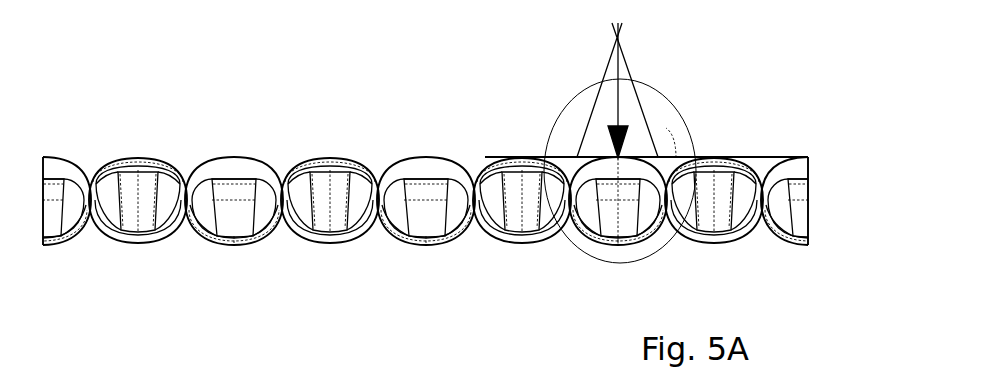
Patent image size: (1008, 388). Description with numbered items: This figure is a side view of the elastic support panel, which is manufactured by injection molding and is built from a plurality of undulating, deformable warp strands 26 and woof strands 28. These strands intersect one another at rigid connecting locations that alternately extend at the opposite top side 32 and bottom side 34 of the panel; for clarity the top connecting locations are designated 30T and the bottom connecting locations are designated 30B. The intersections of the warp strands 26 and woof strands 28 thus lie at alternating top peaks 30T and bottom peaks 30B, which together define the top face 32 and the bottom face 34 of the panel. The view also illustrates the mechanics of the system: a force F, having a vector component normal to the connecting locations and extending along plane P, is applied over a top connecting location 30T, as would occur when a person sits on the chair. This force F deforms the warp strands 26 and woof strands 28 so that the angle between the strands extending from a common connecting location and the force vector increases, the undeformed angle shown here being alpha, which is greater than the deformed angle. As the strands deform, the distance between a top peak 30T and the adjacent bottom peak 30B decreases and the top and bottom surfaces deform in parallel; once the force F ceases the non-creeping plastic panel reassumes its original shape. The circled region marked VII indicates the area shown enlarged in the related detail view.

The warp strands 26 is at (358, 178).
The woof strands 28 is at (322, 212).
The top connecting locations 30T is at (135, 158).
The bottom connecting locations 30B is at (151, 245).
The top side 32 is at (123, 163).
The bottom side 34 is at (115, 244).
The plane P is at (757, 158).
The force F is at (617, 134).
The detail view VII is at (567, 103).